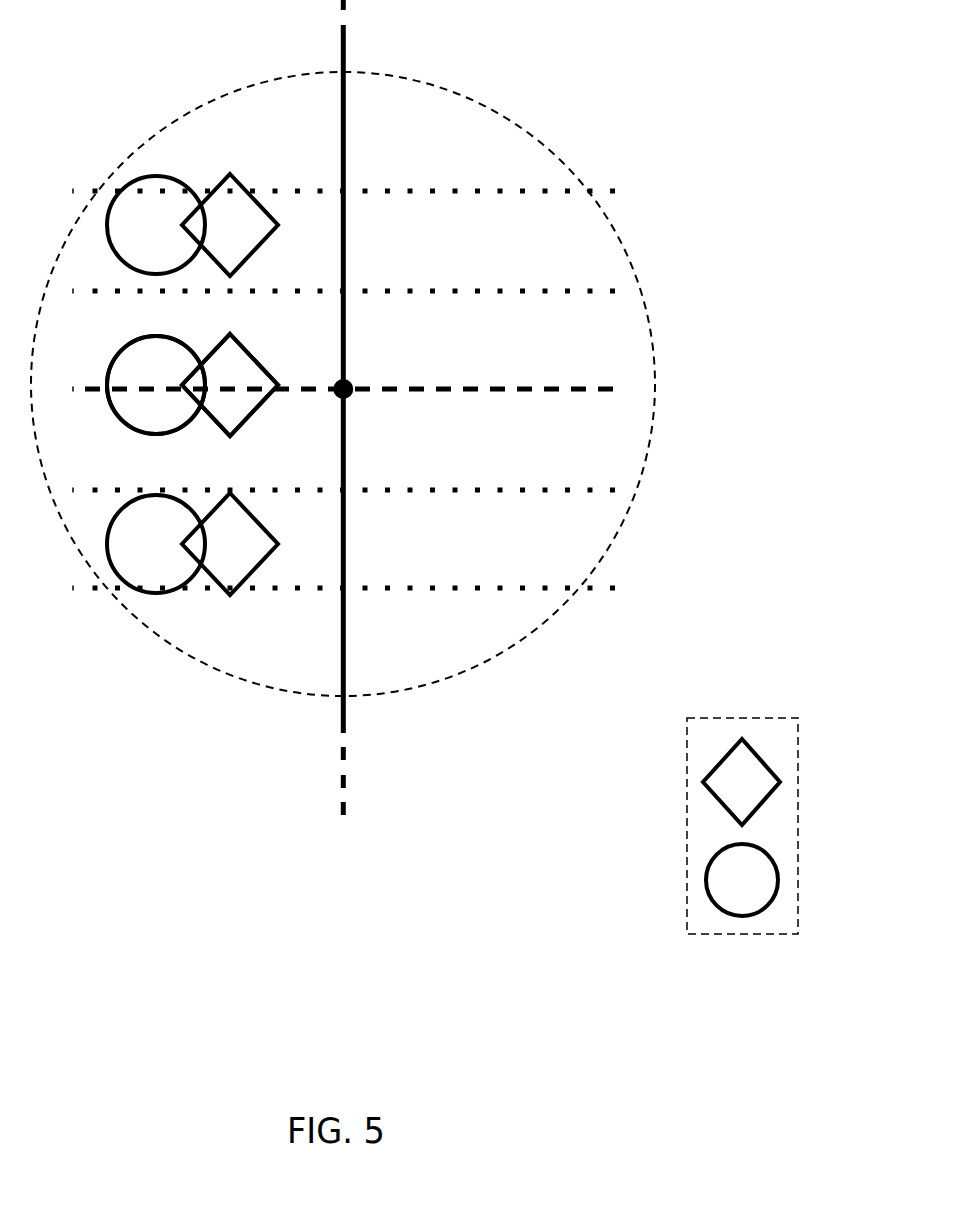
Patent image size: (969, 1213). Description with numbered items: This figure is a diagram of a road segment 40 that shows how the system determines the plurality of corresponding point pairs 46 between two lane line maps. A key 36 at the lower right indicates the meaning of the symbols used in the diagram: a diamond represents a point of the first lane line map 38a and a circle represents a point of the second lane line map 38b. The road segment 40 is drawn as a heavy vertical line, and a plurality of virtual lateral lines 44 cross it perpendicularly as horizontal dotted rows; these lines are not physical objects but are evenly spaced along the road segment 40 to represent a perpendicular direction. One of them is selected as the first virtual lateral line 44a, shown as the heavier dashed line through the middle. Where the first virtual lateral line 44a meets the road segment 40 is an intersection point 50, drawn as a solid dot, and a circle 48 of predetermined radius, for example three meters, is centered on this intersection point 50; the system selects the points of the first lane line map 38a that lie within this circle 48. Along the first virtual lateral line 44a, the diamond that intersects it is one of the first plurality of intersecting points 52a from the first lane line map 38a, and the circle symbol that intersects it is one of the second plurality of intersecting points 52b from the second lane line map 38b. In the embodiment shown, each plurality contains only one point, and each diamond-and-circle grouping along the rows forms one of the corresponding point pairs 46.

The key 36 is at (740, 717).
The first lane line map 38a is at (780, 781).
The second lane line map 38b is at (777, 887).
The road segment 40 is at (346, 153).
The virtual lateral lines 44 is at (525, 163).
The first virtual lateral line 44a is at (607, 395).
The corresponding point pairs 46 is at (175, 162).
The circle 48 is at (618, 233).
The intersection point 50 is at (352, 394).
The first plurality of intersecting points 52a is at (238, 338).
The second plurality of intersecting points 52b is at (128, 341).